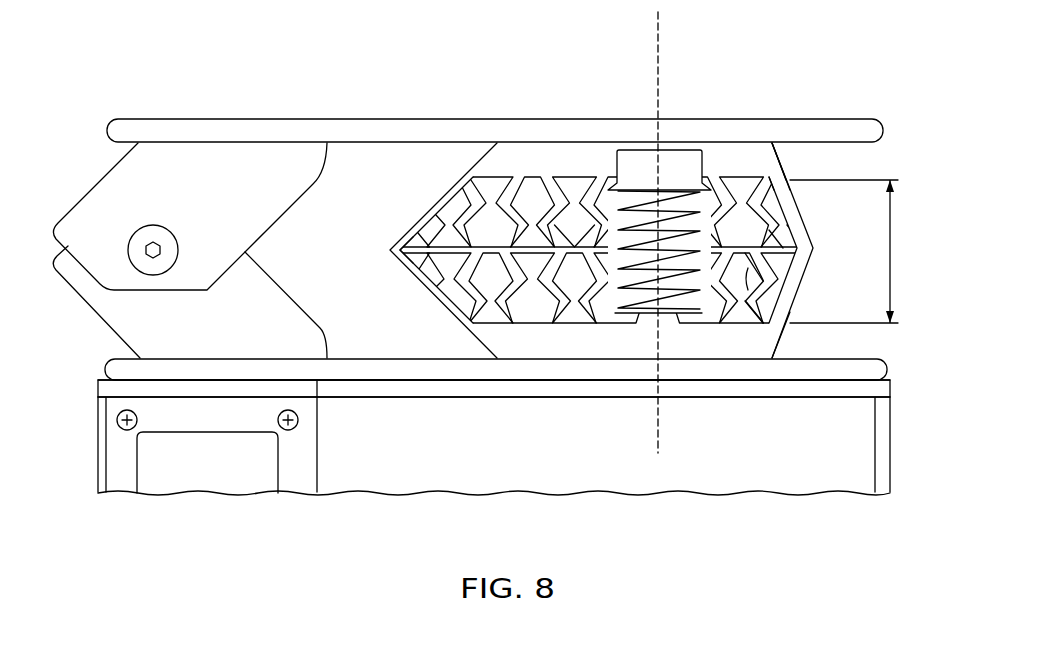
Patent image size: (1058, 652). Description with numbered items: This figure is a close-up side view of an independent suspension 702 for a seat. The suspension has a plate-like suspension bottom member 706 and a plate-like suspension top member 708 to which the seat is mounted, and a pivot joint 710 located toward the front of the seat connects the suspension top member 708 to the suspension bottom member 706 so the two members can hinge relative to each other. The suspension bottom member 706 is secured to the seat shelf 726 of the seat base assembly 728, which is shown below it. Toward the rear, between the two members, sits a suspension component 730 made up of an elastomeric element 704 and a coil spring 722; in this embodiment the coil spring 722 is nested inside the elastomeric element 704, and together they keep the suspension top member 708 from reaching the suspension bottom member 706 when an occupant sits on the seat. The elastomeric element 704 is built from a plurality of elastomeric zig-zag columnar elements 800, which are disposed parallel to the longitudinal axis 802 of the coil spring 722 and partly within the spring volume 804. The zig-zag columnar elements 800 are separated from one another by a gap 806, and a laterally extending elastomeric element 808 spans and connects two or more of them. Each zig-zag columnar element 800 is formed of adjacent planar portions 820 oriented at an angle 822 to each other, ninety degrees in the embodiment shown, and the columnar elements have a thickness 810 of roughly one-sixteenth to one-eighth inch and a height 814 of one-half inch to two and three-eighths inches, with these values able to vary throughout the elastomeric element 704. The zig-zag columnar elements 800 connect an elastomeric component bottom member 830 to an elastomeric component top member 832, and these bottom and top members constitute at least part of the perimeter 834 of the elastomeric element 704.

The independent suspension 702 is at (325, 55).
The elastomeric element 704 is at (299, 176).
The suspension bottom member 706 is at (402, 373).
The suspension top member 708 is at (808, 130).
The pivot joint 710 is at (151, 240).
The coil spring 722 is at (651, 301).
The seat shelf 726 is at (495, 383).
The seat base assembly 728 is at (494, 437).
The suspension component 730 is at (640, 258).
The elastomeric zig-zag columnar elements 800 is at (550, 190).
The longitudinal axis 802 is at (657, 40).
The spring volume 804 is at (712, 297).
The gap 806 is at (580, 317).
The laterally extending elastomeric element 808 is at (573, 247).
The thickness 810 is at (770, 185).
The height 814 is at (891, 250).
The adjacent planar portions 820 is at (747, 260).
The angle 822 is at (750, 278).
The elastomeric component bottom member 830 is at (740, 342).
The elastomeric component top member 832 is at (736, 160).
The perimeter 834 is at (408, 236).